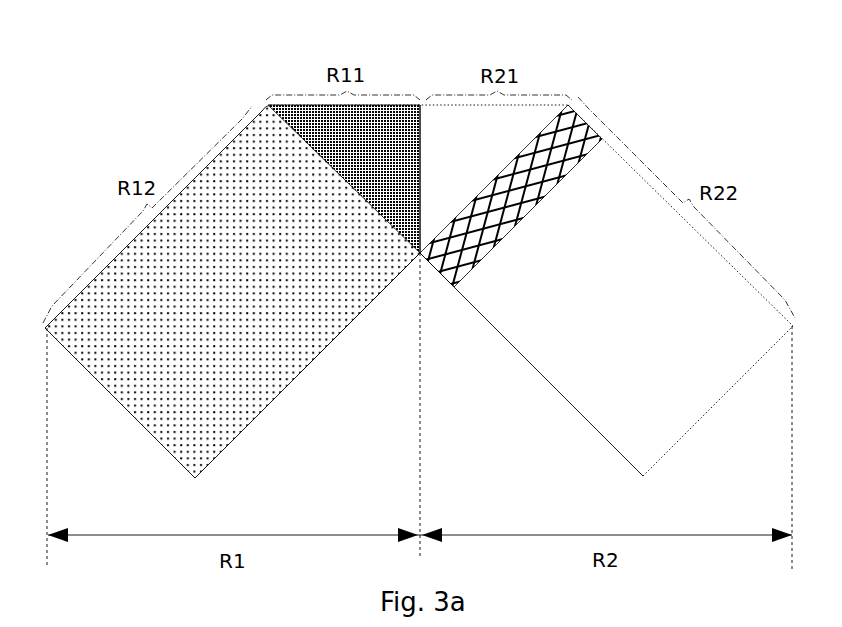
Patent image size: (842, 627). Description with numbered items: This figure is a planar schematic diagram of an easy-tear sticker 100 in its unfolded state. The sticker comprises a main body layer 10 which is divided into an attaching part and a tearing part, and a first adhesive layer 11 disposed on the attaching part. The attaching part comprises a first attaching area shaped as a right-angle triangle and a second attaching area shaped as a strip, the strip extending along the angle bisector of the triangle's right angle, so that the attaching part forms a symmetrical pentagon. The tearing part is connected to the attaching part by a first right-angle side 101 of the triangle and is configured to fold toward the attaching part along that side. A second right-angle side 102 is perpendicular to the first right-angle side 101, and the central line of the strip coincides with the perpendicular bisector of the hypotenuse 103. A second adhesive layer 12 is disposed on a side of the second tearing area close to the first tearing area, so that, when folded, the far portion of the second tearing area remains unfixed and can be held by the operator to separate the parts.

The easy-tear sticker 100 is at (266, 49).
The main body layer 10 is at (562, 360).
The first adhesive layer 11 is at (260, 157).
The second adhesive layer 12 is at (445, 289).
The first right-angle side 101 is at (421, 130).
The second right-angle side 102 is at (357, 108).
The hypotenuse 103 is at (405, 275).